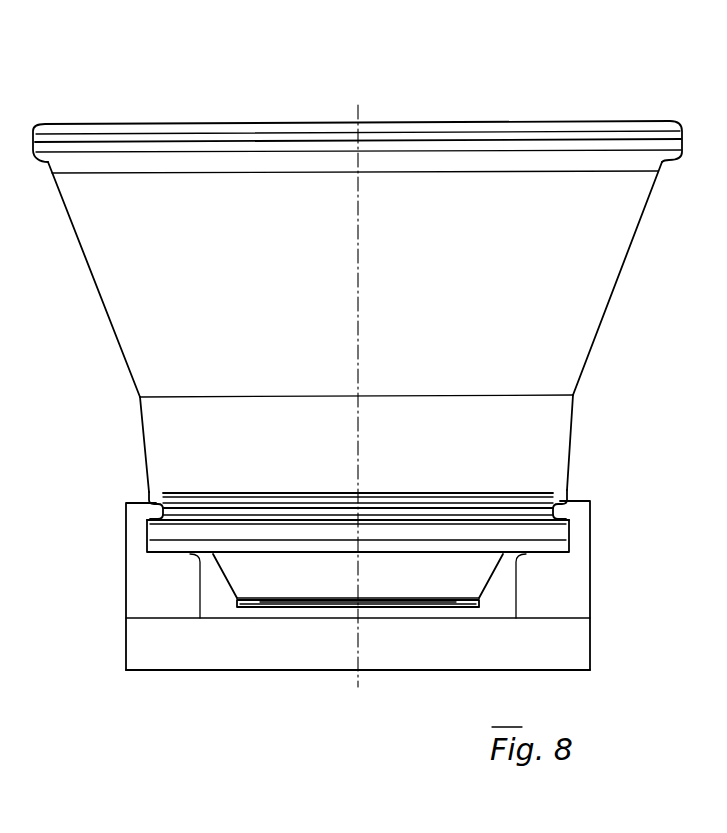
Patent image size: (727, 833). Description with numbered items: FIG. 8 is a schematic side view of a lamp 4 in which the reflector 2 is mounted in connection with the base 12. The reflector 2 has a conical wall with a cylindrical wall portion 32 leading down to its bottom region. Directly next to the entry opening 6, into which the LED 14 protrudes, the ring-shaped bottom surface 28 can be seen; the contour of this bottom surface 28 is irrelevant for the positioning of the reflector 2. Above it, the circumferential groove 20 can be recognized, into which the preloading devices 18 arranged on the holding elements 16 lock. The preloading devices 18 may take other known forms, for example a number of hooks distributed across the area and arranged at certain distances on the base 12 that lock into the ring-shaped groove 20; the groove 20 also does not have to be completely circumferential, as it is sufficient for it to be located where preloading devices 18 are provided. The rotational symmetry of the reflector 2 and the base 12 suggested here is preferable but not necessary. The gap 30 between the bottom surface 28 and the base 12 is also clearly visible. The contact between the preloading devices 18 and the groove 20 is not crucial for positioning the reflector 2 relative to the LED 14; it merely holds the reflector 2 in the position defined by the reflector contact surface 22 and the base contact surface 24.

The packaging assembly 4 is at (421, 73).
The reflector 2 is at (588, 293).
The cylindrical wall portion 32 is at (547, 443).
The circumferential groove 20 is at (435, 508).
The reflector contact surface 22 is at (150, 512).
The preloading device 18 is at (138, 513).
The holding element 16 is at (138, 545).
The base contact surface 24 is at (200, 556).
The ring-shaped bottom surface 28 is at (253, 607).
The entry opening 6 is at (280, 607).
The LED 14 is at (315, 610).
The gap 30 is at (433, 610).
The base 12 is at (450, 652).